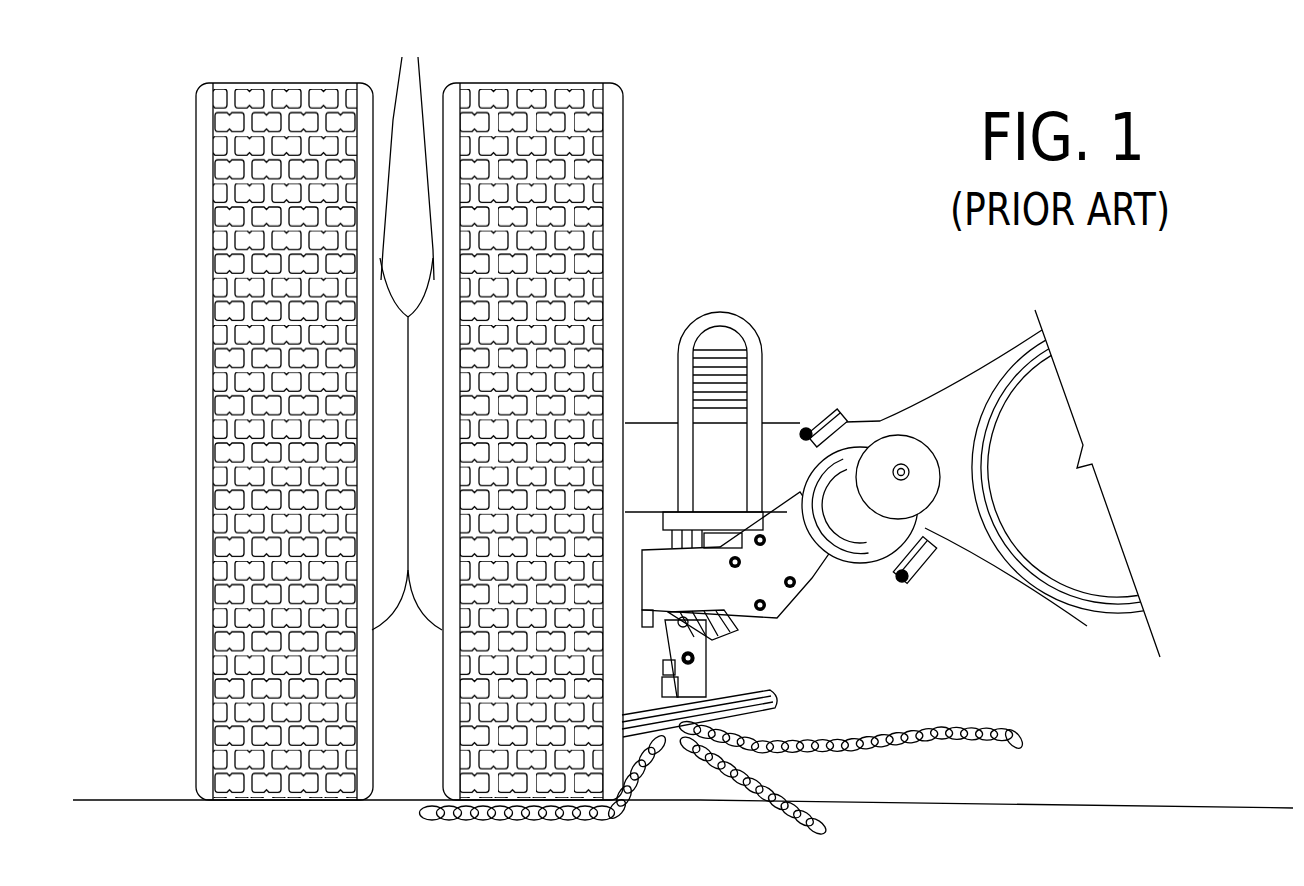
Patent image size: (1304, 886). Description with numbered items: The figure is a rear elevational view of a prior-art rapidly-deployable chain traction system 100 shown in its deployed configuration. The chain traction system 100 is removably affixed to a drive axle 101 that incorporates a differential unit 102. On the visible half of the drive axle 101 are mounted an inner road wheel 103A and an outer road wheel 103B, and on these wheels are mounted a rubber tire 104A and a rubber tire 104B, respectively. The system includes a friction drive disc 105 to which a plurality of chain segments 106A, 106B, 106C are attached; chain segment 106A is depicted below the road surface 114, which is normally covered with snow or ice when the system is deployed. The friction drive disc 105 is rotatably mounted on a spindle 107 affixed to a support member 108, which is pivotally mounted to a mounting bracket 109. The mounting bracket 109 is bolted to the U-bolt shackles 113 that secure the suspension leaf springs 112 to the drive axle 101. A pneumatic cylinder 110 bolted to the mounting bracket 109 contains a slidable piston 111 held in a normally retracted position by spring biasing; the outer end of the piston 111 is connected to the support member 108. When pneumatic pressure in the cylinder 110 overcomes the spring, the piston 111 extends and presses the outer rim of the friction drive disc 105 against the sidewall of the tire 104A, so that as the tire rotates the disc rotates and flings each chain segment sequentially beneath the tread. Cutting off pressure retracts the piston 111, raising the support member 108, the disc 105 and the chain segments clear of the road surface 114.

The chain traction system 100 is at (1045, 706).
The drive axle 101 is at (654, 450).
The differential unit 102 is at (1035, 437).
The inner road wheel 103A is at (418, 57).
The outer road wheel 103B is at (402, 57).
The rubber tire 104A is at (552, 95).
The rubber tire 104B is at (267, 90).
The friction drive disc 105 is at (775, 700).
The chain segment 106A is at (425, 820).
The chain segment 106B is at (825, 836).
The chain segment 106C is at (965, 758).
The spindle 107 is at (703, 688).
The support member 108 is at (703, 672).
The mounting bracket 109 is at (712, 596).
The pneumatic cylinder 110 is at (857, 579).
The piston 111 is at (717, 630).
The suspension leaf springs 112 is at (722, 378).
The U-bolt shackles 113 is at (755, 365).
The road surface 114 is at (150, 784).